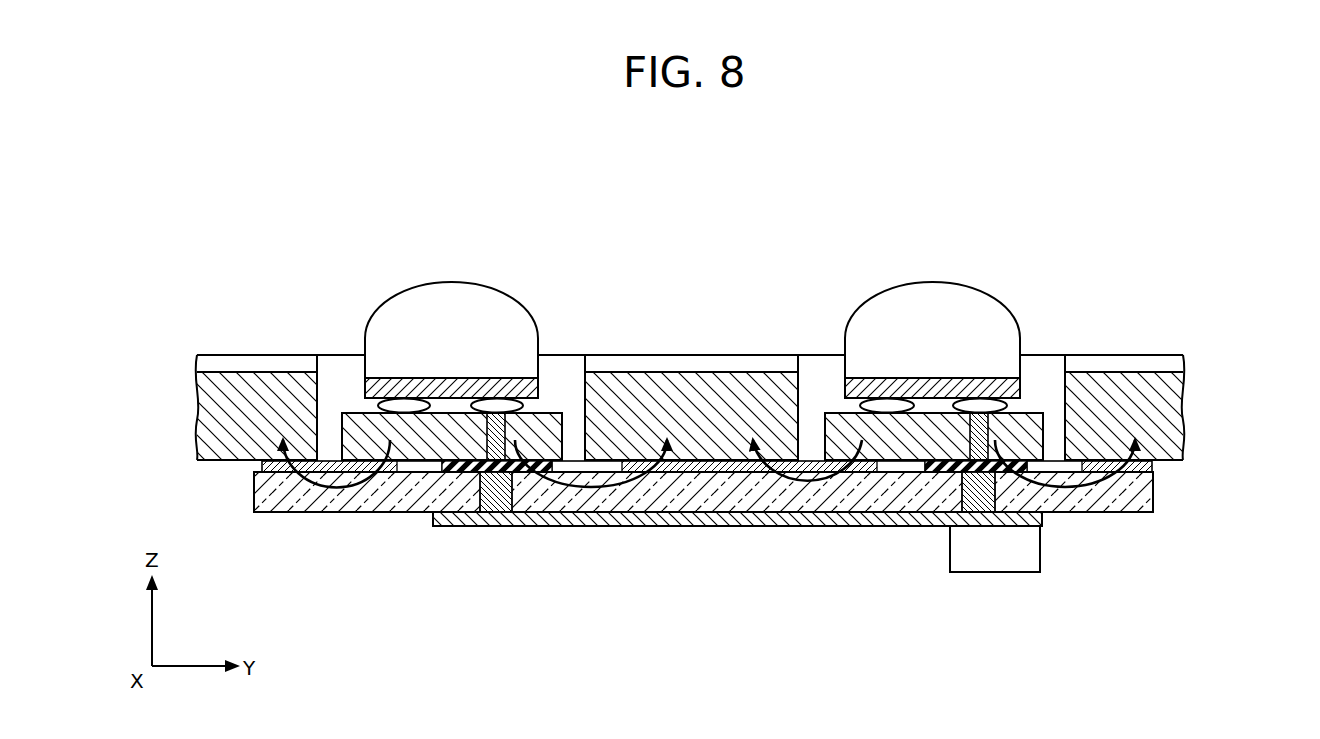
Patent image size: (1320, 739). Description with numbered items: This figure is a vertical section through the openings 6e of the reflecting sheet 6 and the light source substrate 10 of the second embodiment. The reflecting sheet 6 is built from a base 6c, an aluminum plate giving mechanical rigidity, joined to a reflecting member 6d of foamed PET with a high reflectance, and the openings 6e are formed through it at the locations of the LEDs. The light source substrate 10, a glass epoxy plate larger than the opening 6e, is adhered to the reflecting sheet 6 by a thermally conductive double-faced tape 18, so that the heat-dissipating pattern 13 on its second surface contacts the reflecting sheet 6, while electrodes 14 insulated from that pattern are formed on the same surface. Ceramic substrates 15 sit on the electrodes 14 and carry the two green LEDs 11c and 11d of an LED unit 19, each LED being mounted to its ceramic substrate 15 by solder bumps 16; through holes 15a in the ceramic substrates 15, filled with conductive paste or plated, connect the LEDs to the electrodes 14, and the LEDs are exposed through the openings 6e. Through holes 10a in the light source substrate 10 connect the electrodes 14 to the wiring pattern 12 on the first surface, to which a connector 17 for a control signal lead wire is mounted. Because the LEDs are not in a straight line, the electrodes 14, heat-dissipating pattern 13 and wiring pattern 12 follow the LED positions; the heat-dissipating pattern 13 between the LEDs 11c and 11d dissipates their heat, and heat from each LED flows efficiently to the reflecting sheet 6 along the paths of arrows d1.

The reflecting sheet 6 is at (738, 380).
The base 6c is at (1173, 397).
The reflecting member 6d is at (1173, 358).
The opening 6e is at (1053, 398).
The light source substrate 10 is at (343, 497).
The through hole 10a is at (493, 507).
The green LED 11c is at (512, 313).
The green LED 11d is at (895, 323).
The wiring pattern 12 is at (687, 520).
The heat-dissipating pattern 13 is at (326, 460).
The electrode 14 is at (457, 470).
The ceramic substrate 15 is at (1028, 412).
The through hole 15a is at (507, 470).
The solder bump 16 is at (523, 407).
The connector 17 is at (1020, 560).
The thermally conductive double-faced tape 18 is at (746, 394).
The LED unit 19 is at (692, 301).
The arrow d1 is at (305, 483).